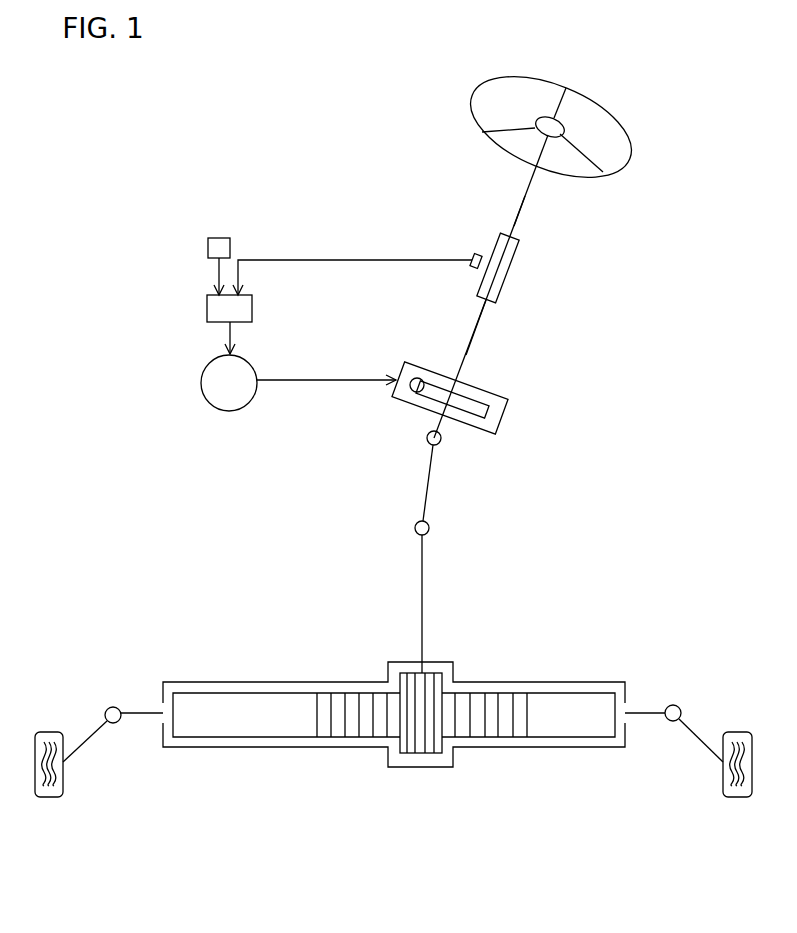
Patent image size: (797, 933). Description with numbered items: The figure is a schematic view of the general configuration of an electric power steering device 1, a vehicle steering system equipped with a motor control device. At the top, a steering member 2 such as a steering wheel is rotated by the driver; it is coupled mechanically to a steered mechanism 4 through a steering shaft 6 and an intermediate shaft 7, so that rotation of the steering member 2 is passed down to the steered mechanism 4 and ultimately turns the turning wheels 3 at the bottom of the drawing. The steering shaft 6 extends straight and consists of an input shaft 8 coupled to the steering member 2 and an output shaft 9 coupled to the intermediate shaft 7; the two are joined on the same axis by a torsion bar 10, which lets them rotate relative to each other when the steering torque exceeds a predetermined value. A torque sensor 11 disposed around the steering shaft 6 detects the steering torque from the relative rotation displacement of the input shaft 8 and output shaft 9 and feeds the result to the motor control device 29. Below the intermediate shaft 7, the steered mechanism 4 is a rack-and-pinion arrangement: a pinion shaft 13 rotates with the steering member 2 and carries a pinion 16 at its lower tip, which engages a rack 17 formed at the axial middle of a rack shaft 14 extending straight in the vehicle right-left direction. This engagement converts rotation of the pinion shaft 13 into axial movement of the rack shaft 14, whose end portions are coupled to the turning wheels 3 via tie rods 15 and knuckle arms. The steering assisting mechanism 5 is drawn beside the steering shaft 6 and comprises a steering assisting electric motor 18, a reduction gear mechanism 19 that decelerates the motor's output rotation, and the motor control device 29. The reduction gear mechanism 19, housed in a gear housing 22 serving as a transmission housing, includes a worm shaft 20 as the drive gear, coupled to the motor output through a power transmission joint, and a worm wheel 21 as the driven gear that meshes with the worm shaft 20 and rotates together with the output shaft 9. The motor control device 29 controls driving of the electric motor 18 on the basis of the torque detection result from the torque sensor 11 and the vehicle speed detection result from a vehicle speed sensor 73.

The electric power steering device 1 is at (288, 137).
The steering member 2 is at (552, 79).
The turning wheels 3 is at (48, 732).
The steered mechanism 4 is at (448, 676).
The steering assisting mechanism 5 is at (413, 362).
The steering shaft 6 is at (531, 188).
The intermediate shaft 7 is at (431, 497).
The input shaft 8 is at (517, 222).
The output shaft 9 is at (473, 343).
The torsion bar 10 is at (501, 270).
The torque sensor 11 is at (472, 254).
The pinion shaft 13 is at (424, 602).
The rack shaft 14 is at (571, 738).
The tie rods 15 is at (92, 738).
The pinion 16 is at (422, 755).
The rack 17 is at (339, 738).
The electric motor 18 is at (228, 412).
The reduction gear mechanism 19 is at (508, 407).
The worm shaft 20 is at (411, 393).
The worm wheel 21 is at (482, 411).
The gear housing 22 is at (470, 431).
The motor control device 29 is at (206, 308).
The vehicle speed sensor 73 is at (218, 236).